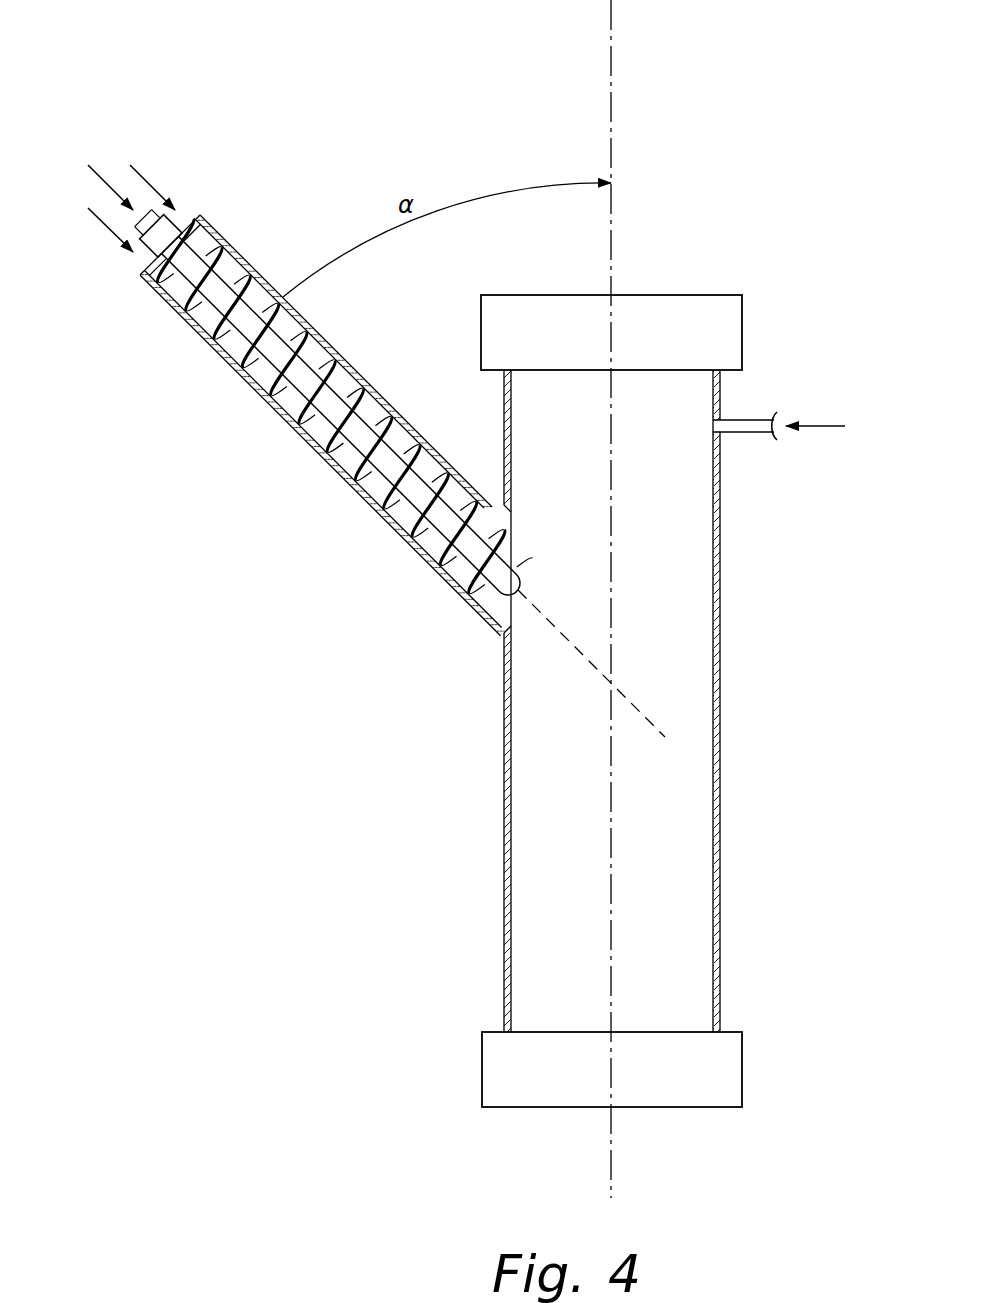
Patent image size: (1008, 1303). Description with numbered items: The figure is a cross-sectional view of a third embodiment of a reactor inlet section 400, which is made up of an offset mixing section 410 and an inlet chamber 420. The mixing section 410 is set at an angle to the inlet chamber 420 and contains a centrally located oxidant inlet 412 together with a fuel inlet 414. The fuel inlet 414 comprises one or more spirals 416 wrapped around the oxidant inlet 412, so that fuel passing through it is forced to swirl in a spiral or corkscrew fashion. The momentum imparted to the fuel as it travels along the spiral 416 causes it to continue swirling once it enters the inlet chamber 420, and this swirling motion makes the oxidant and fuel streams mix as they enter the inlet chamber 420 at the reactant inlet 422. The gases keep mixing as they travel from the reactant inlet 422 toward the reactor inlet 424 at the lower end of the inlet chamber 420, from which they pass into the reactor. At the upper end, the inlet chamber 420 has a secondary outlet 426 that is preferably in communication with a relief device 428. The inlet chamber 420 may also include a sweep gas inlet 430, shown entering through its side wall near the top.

The reactor inlet section 400 is at (745, 700).
The mixing section 410 is at (286, 420).
The oxidant inlet 412 is at (152, 240).
The fuel inlet 414 is at (186, 222).
The spiral 416 is at (358, 472).
The inlet chamber 420 is at (720, 922).
The reactant inlet 422 is at (506, 612).
The reactor inlet 424 is at (742, 1046).
The secondary outlet 426 is at (720, 388).
The relief device 428 is at (742, 308).
The sweep gas inlet 430 is at (748, 433).